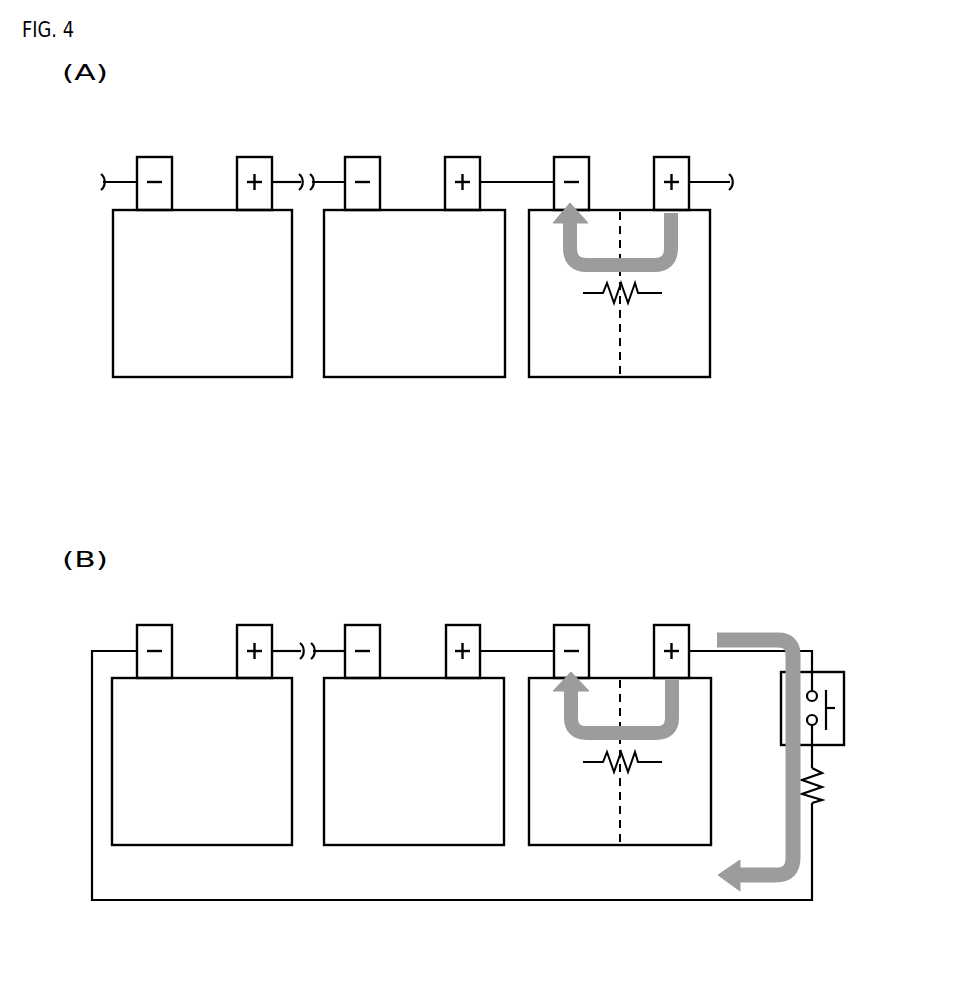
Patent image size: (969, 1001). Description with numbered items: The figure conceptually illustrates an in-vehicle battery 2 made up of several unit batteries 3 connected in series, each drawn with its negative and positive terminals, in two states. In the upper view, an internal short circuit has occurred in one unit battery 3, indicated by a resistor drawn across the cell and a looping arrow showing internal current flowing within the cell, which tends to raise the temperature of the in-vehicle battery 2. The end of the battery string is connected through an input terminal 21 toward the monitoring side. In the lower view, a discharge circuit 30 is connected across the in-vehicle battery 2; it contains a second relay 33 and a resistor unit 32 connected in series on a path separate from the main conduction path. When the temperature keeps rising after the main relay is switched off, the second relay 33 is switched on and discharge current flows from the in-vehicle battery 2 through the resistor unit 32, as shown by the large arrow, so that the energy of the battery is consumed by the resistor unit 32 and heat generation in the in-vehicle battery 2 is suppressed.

The in-vehicle battery 2 is at (452, 524).
The unit battery 3 is at (196, 378).
The input terminal 21 is at (712, 180).
The discharge circuit 30 is at (817, 722).
The resistor unit 32 is at (822, 781).
The second relay 33 is at (845, 707).